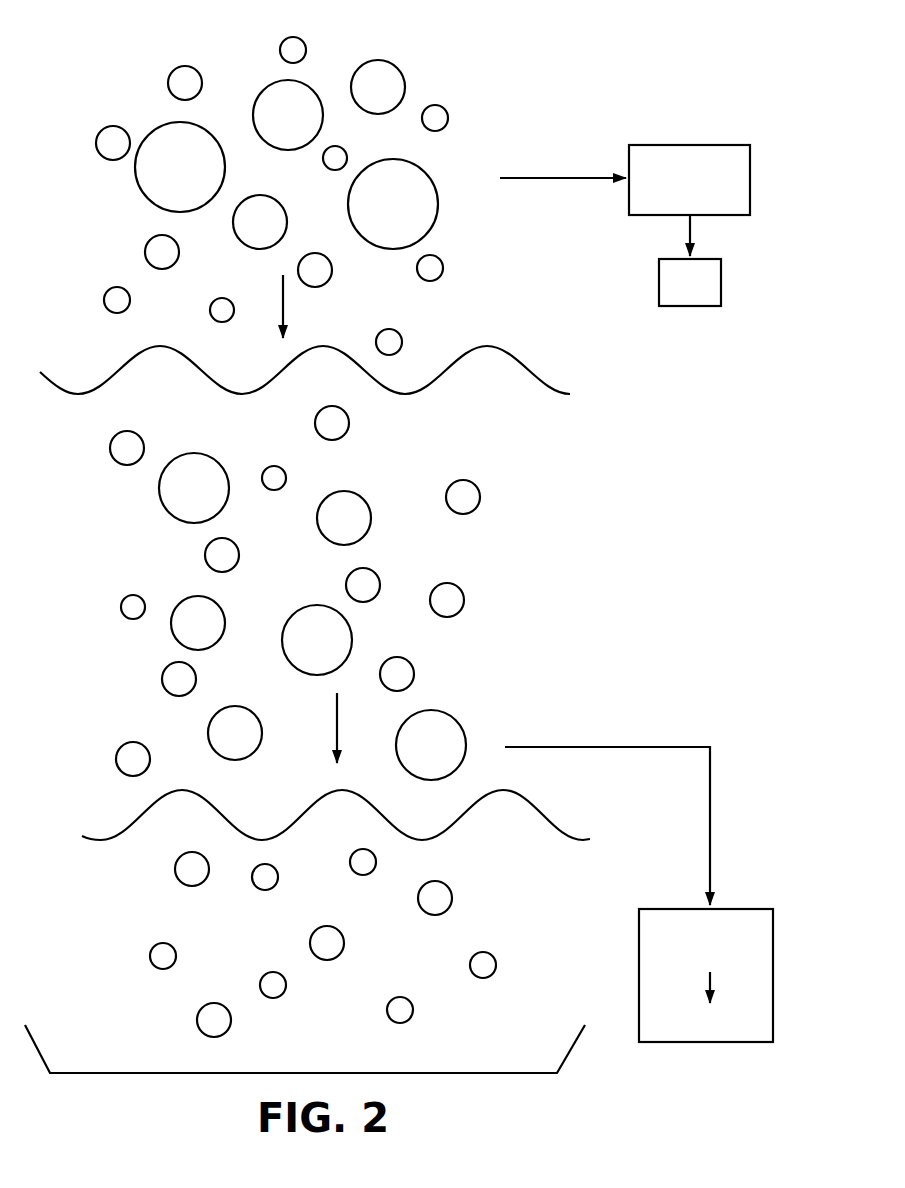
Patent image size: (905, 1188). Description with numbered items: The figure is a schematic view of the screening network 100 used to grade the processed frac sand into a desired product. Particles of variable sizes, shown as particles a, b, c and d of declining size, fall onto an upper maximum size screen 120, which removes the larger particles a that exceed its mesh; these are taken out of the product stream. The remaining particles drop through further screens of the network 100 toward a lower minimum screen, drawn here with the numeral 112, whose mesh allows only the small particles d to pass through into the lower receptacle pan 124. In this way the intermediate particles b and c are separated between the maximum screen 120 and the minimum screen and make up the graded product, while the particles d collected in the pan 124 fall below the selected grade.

The screening network 100 is at (541, 69).
The maximum size screen 120 is at (500, 348).
The minimum size screen 112 is at (552, 823).
The lower receptacle pan 124 is at (498, 1074).
The large particles a is at (143, 182).
The intermediate particles b is at (270, 92).
The intermediate particles c is at (390, 75).
The small particles d is at (348, 425).